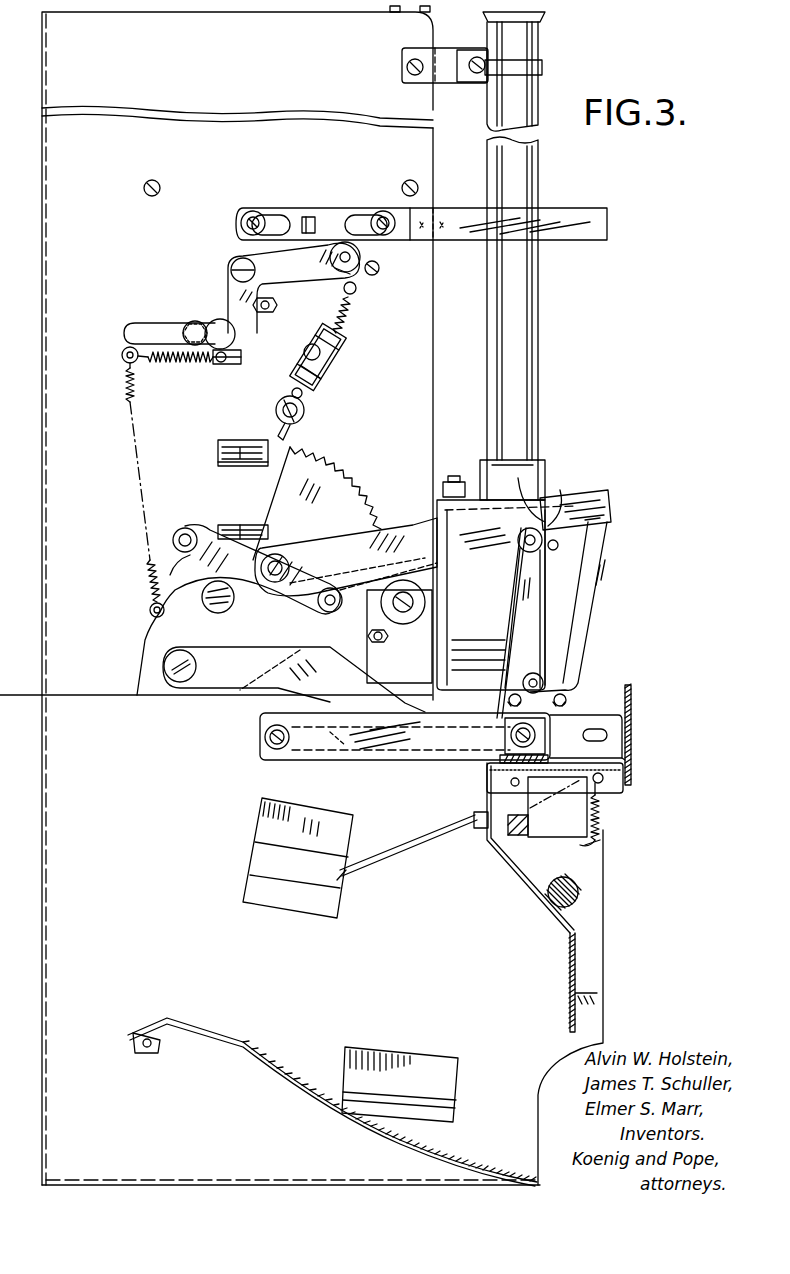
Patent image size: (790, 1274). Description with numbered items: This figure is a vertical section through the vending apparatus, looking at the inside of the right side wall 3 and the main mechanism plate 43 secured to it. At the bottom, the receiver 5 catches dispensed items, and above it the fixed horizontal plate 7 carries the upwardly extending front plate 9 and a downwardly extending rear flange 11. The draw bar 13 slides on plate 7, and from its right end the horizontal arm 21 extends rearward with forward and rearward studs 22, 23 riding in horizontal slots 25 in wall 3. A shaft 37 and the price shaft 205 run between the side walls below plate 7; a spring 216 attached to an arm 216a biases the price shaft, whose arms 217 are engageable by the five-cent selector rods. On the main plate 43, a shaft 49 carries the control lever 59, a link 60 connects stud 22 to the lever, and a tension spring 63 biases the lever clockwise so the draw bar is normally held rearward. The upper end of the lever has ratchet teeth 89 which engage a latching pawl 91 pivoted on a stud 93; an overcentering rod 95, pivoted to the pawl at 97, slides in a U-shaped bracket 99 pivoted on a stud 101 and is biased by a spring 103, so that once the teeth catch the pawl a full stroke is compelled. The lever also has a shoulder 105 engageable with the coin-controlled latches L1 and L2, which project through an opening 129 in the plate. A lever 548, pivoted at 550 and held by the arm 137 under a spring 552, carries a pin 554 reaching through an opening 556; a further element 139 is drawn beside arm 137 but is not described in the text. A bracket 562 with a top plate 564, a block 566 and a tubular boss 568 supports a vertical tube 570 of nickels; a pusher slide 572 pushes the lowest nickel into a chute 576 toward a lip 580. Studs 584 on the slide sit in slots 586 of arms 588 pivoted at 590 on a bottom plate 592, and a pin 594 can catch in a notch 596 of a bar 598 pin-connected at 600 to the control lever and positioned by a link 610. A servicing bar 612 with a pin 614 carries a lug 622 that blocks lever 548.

The right side wall 3 is at (290, 978).
The receiver 5 is at (270, 1069).
The fixed horizontal plate 7 is at (624, 762).
The front plate 9 is at (633, 693).
The rear flange 11 is at (488, 787).
The draw bar 13 is at (502, 758).
The horizontal arm 21 is at (302, 762).
The forward stud 22 is at (511, 735).
The rearward stud 23 is at (265, 737).
The horizontal slots 25 is at (598, 729).
The shaft 37 is at (580, 890).
The main mechanism plate 43 is at (48, 298).
The shaft 49 is at (218, 613).
The control lever 59 is at (160, 634).
The link 60 is at (292, 662).
The tension spring 63 is at (127, 395).
The ratchet teeth 89 is at (322, 456).
The latching pawl 91 is at (291, 424).
The stud 93 is at (305, 409).
The rod 95 is at (324, 370).
The pivot connection 97 is at (292, 392).
The U-shaped bracket 99 is at (336, 345).
The stud 101 is at (304, 351).
The spring 103 is at (350, 298).
The shoulder 105 is at (283, 500).
The opening 129 is at (222, 463).
The arm 137 is at (226, 366).
The clevis 139 is at (242, 359).
The price shaft 205 is at (518, 836).
The spring 216 is at (612, 808).
The arm 216a is at (600, 852).
The arms 217 is at (566, 800).
The lever 548 is at (230, 286).
The pivot 550 is at (243, 262).
The spring 552 is at (163, 366).
The pin 554 is at (362, 254).
The opening 556 is at (341, 277).
The bracket 562 is at (595, 576).
The top plate 564 is at (610, 512).
The block 566 is at (477, 490).
The tubular boss 568 is at (541, 468).
The vertical tube 570 is at (527, 160).
The nickel pusher slide 572 is at (608, 500).
The chute 576 is at (382, 561).
The lip 580 is at (422, 620).
The studs 584 is at (520, 494).
The slots 586 is at (560, 490).
The arms 588 is at (555, 600).
The pivot 590 is at (545, 680).
The bottom plate 592 is at (568, 696).
The pin 594 is at (559, 547).
The notch 596 is at (560, 530).
The bar 598 is at (348, 538).
The pin connection 600 is at (286, 563).
The link 610 is at (510, 618).
The bar 612 is at (332, 209).
The pin 614 is at (245, 216).
The lug 622 is at (302, 216).
The coin-controlled latch L1 is at (243, 441).
The coin-controlled latch L2 is at (250, 467).